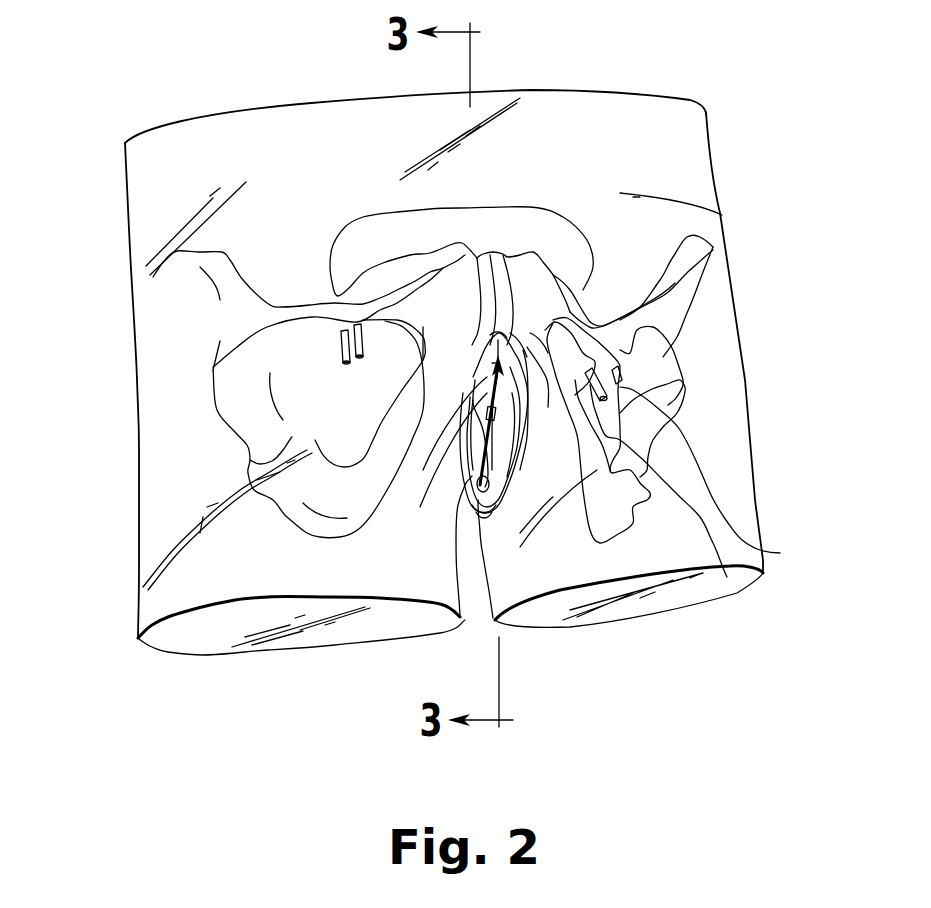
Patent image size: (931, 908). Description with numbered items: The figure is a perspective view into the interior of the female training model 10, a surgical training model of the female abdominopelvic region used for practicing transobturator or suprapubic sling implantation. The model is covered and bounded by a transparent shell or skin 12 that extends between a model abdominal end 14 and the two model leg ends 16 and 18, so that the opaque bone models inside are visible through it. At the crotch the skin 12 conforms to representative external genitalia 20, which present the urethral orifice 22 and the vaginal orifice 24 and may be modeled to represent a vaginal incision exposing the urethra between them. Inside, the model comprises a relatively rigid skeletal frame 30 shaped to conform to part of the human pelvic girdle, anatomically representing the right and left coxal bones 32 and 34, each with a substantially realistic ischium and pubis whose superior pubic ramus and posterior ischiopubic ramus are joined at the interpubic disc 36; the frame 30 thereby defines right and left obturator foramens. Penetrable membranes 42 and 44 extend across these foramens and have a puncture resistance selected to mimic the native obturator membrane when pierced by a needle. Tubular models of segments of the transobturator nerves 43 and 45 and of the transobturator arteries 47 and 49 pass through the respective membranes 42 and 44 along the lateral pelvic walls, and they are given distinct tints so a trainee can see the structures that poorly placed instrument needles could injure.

The female training model 10 is at (272, 733).
The skin 12 is at (673, 140).
The model abdominal end 14 is at (195, 117).
The model leg end 16 is at (212, 633).
The model leg end 18 is at (673, 603).
The external genitalia 20 is at (452, 477).
The urethral orifice 22 is at (477, 330).
The vaginal orifice 24 is at (477, 480).
The skeletal frame 30 is at (777, 243).
The right coxal bone 32 is at (627, 290).
The left coxal bone 34 is at (298, 292).
The interpubic disc 36 is at (490, 252).
The penetrable membrane 42 is at (573, 343).
The transobturator nerve 43 is at (780, 553).
The penetrable membrane 44 is at (340, 410).
The transobturator nerve 45 is at (341, 360).
The transobturator artery 47 is at (727, 577).
The transobturator artery 49 is at (220, 341).